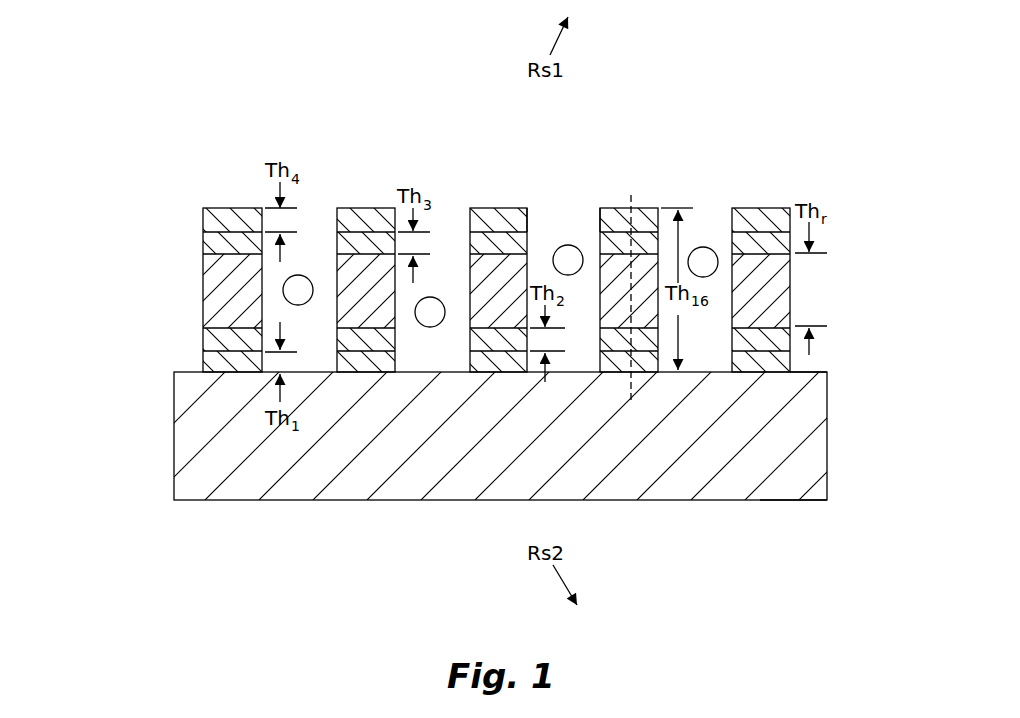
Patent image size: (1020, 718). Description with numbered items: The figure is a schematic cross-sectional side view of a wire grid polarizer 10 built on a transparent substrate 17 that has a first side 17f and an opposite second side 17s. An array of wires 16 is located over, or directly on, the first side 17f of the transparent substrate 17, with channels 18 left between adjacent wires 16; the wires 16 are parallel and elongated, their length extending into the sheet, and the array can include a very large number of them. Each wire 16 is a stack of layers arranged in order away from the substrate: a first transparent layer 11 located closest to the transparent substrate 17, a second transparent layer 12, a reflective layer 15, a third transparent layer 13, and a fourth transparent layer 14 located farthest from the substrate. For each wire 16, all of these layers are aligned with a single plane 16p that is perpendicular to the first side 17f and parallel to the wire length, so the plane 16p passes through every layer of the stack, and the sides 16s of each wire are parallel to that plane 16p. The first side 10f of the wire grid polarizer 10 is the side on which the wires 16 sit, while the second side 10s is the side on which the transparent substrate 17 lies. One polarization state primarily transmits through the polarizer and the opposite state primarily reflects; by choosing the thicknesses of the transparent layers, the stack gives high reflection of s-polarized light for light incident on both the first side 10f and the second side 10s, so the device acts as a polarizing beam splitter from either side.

The wire grid polarizer 10 is at (493, 338).
The first side of the WGP 10f is at (437, 88).
The second side of the WGP 10s is at (405, 534).
The first transparent layer 11 is at (197, 363).
The second transparent layer 12 is at (197, 342).
The third transparent layer 13 is at (197, 243).
The fourth transparent layer 14 is at (197, 222).
The reflective layer 15 is at (197, 287).
The wires 16 is at (493, 265).
The sides of the wire 16s is at (599, 215).
The plane 16p is at (632, 392).
The transparent substrate 17 is at (497, 443).
The first side of the transparent substrate 17f is at (820, 367).
The second side of the transparent substrate 17s is at (802, 502).
The channels 18 is at (500, 286).